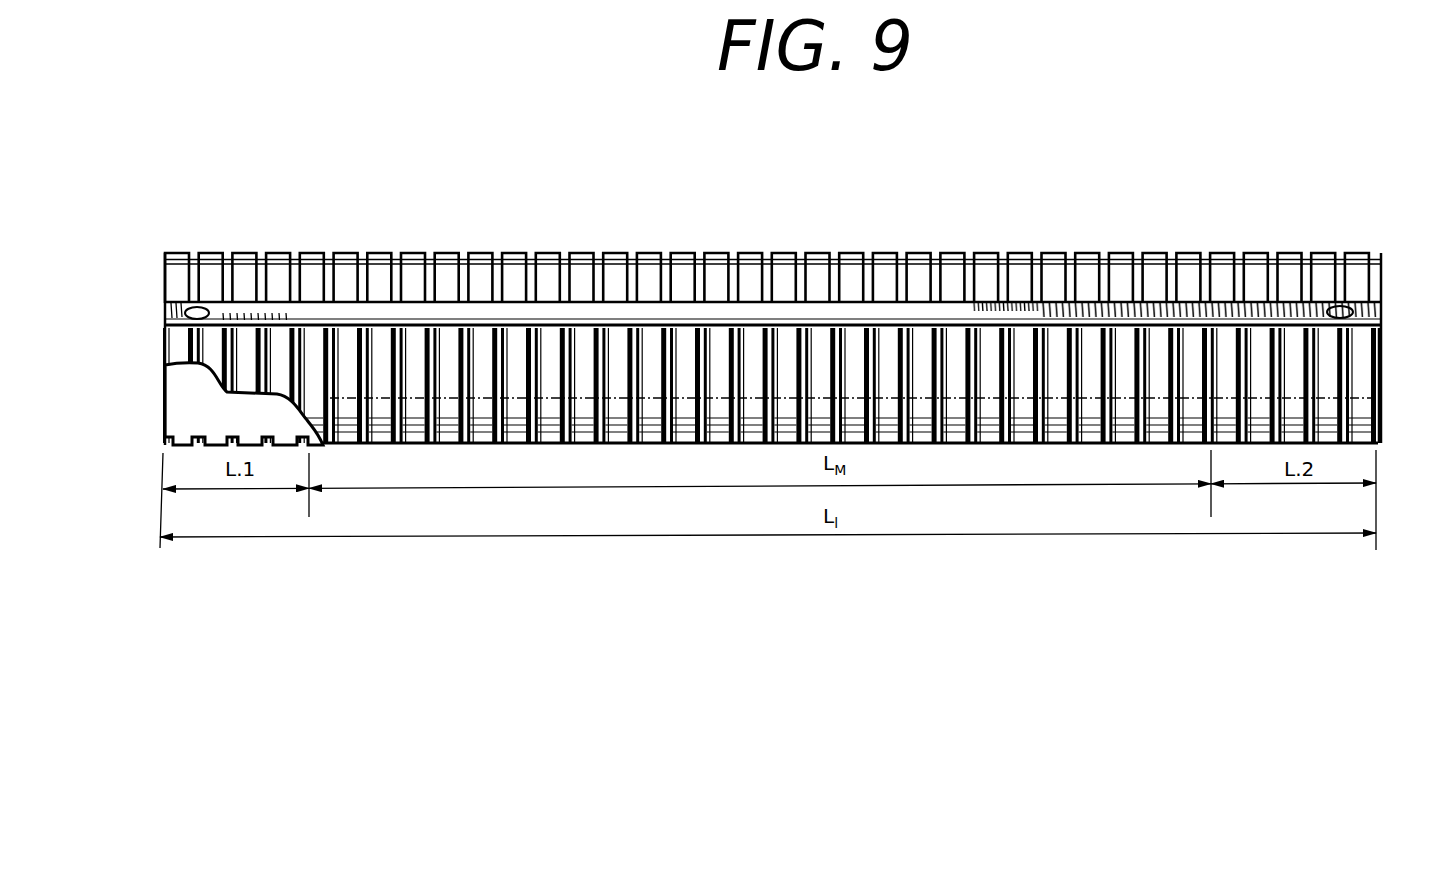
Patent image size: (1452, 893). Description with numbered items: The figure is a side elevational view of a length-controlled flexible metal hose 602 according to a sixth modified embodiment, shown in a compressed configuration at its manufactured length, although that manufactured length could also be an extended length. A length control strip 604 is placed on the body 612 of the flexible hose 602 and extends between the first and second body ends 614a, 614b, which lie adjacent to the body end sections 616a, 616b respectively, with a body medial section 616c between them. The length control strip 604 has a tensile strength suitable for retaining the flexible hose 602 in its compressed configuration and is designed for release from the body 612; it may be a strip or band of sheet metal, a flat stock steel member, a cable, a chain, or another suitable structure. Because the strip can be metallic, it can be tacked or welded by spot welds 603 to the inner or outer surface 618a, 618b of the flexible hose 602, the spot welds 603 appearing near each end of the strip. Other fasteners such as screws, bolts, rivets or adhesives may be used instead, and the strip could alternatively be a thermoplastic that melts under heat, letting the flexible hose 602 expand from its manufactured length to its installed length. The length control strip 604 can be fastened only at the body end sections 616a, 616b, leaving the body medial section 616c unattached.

The flexible hose 602 is at (335, 163).
The spot welds 603 is at (197, 307).
The length control strip 604 is at (985, 262).
The body 612 is at (1392, 251).
The first body end 614a is at (166, 353).
The second body end 614b is at (1379, 375).
The body end section 616a is at (220, 257).
The body end section 616b is at (1288, 252).
The body medial section 616c is at (750, 266).
The inner surface 618a is at (240, 427).
The outer surface 618b is at (653, 280).